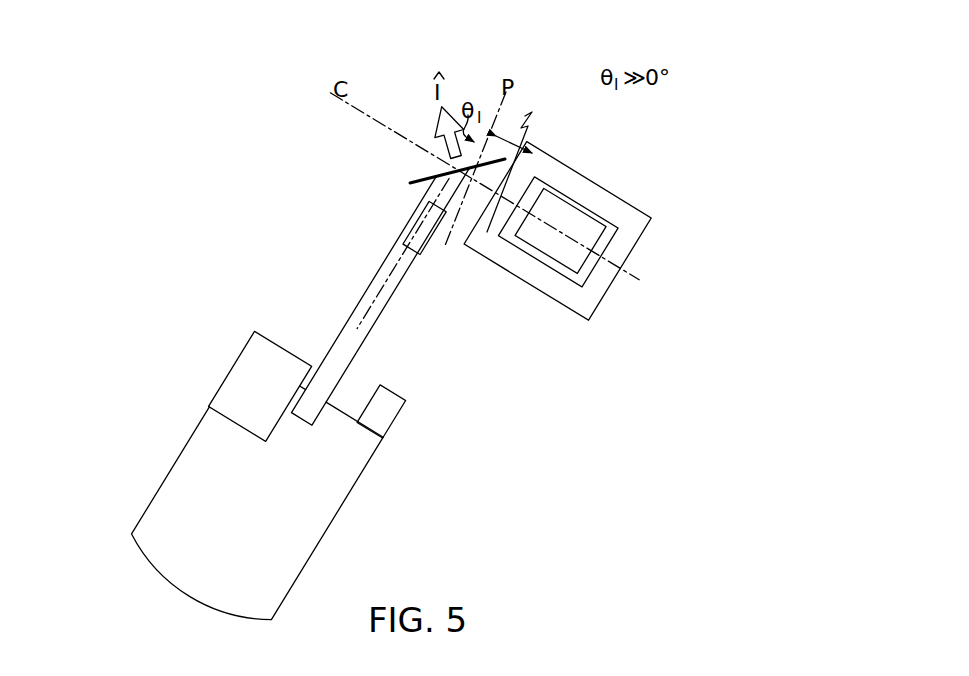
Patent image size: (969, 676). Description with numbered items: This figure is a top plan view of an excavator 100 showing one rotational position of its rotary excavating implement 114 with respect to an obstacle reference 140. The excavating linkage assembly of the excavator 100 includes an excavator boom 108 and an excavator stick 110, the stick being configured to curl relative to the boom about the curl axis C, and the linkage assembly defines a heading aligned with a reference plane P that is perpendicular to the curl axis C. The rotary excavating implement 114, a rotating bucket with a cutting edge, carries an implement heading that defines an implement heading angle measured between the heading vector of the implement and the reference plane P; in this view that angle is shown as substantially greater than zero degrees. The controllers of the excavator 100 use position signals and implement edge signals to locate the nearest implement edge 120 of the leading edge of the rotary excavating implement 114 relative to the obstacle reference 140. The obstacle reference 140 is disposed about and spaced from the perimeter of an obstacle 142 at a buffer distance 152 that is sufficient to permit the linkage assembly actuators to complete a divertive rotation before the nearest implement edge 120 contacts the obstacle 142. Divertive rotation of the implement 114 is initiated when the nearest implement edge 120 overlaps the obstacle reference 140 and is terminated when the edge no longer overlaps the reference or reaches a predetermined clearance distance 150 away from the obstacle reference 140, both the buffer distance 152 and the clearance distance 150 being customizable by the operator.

The excavator 100 is at (216, 137).
The excavator boom 108 is at (397, 299).
The excavator stick 110 is at (432, 230).
The rotary excavating implement 114 is at (428, 181).
The nearest implement edge 120 is at (525, 116).
The obstacle reference 140 is at (654, 233).
The obstacle 142 is at (594, 196).
The predetermined clearance distance 150 is at (526, 145).
The buffer distance 152 is at (540, 196).